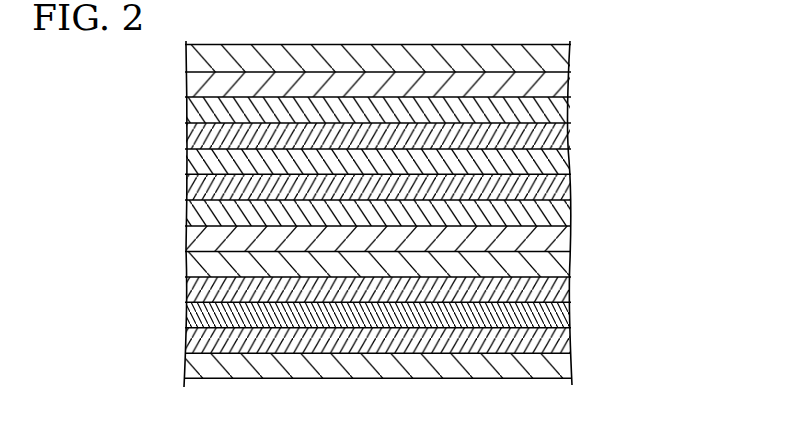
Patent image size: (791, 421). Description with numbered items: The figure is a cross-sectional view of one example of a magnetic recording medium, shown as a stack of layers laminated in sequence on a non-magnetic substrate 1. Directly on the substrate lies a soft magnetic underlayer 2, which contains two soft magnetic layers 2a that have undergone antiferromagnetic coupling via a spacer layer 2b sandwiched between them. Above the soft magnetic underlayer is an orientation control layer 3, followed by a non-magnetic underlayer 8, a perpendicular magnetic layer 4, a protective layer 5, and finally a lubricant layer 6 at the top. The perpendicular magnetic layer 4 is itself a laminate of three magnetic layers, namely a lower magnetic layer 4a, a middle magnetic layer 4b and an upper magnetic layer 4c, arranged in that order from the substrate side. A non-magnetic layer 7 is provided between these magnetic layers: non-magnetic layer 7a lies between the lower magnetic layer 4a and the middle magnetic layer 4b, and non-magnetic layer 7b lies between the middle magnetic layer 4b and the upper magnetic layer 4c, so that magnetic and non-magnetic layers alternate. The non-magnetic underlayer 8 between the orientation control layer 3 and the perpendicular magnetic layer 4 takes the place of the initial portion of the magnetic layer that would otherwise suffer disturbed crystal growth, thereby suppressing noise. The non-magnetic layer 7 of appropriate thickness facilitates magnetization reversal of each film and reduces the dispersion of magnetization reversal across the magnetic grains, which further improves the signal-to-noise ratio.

The non-magnetic substrate 1 is at (553, 367).
The soft magnetic underlayer 2 is at (430, 313).
The soft magnetic layers 2a is at (553, 290).
The spacer layer 2b is at (553, 316).
The orientation control layer 3 is at (550, 264).
The perpendicular magnetic layer 4 is at (425, 159).
The lower magnetic layer 4a is at (557, 212).
The middle magnetic layer 4b is at (553, 160).
The upper magnetic layer 4c is at (550, 108).
The protective layer 5 is at (555, 83).
The lubricant layer 6 is at (553, 58).
The non-magnetic layer 7 is at (465, 160).
The non-magnetic layer 7a is at (555, 189).
The non-magnetic layer 7b is at (553, 137).
The non-magnetic underlayer 8 is at (553, 237).